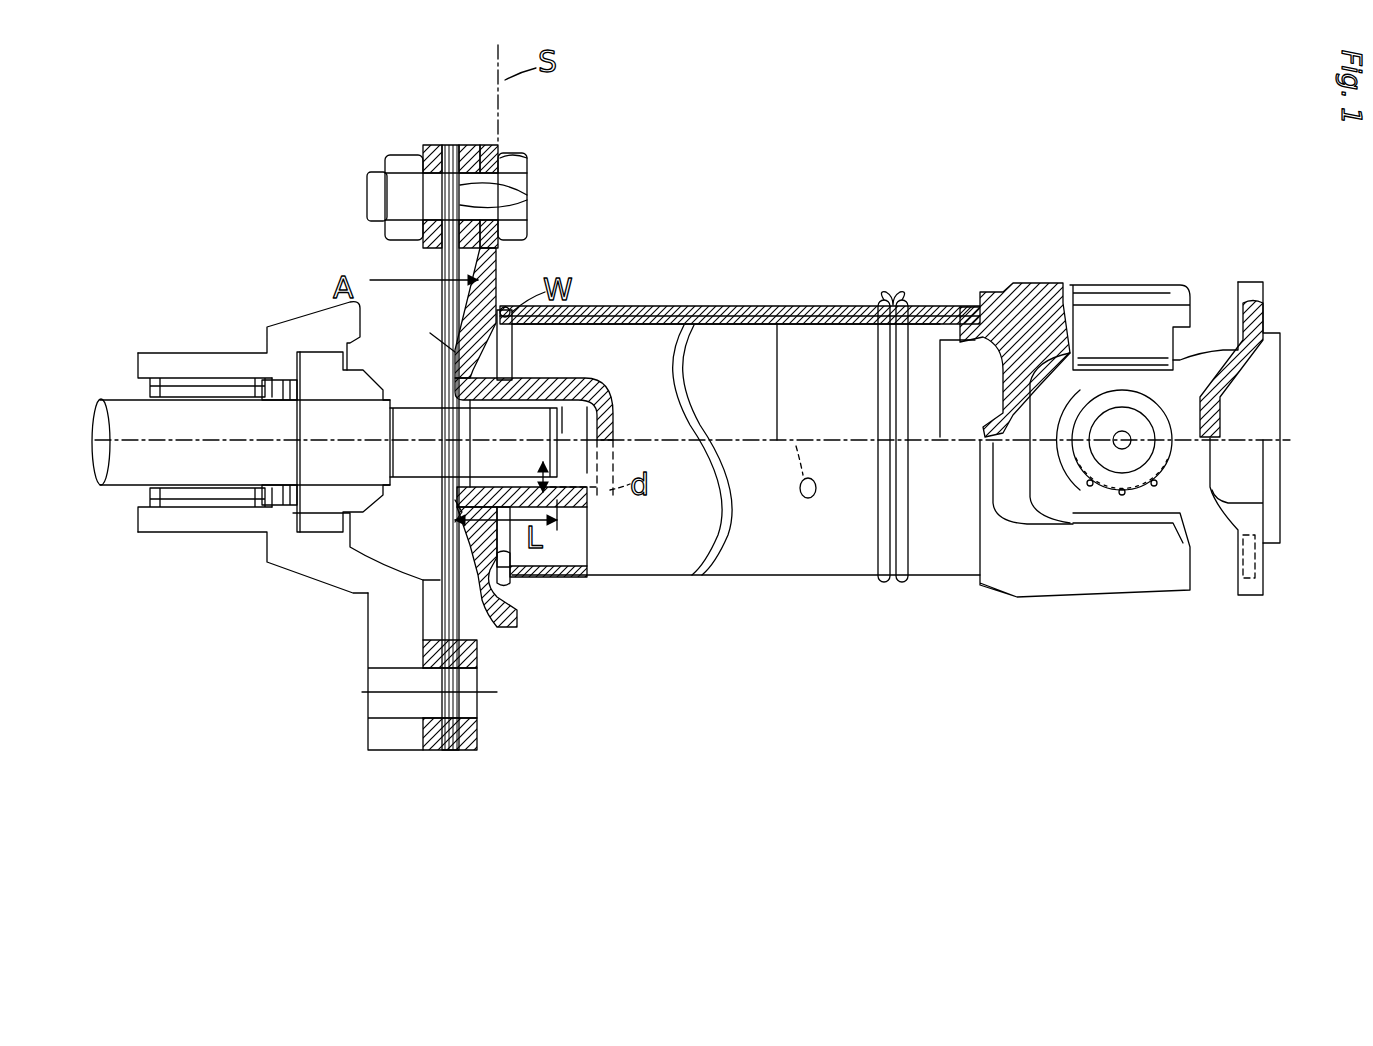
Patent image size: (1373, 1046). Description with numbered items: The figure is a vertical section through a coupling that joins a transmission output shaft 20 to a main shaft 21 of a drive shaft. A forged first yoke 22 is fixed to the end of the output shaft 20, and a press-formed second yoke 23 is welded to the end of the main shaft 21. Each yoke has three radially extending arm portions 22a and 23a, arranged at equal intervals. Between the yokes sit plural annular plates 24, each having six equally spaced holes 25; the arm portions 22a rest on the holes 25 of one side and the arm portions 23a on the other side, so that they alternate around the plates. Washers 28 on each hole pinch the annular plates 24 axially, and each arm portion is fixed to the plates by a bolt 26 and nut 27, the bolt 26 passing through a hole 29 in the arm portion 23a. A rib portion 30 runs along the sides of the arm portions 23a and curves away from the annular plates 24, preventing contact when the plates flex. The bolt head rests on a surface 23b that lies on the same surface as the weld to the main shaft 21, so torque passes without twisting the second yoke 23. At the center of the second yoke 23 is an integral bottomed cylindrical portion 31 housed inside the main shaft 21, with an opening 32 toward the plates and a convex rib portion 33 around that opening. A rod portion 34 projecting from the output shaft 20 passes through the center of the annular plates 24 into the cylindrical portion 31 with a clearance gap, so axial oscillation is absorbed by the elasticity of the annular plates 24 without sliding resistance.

The output shaft 20 is at (130, 483).
The main shaft 21 is at (670, 318).
The first yoke 22 is at (200, 355).
The arm portions 22a is at (375, 622).
The second yoke 23 is at (547, 360).
The arm portions 23a is at (498, 258).
The surface 23b is at (495, 148).
The annular plates 24 is at (452, 145).
The holes 25 is at (470, 192).
The bolt 26 is at (490, 692).
The nut 27 is at (390, 232).
The washers 28 is at (470, 145).
The hole 29 is at (528, 163).
The rib portion 30 is at (512, 585).
The cylindrical portion 31 is at (583, 378).
The opening 32 is at (455, 530).
The rib portion 33 is at (458, 502).
The rod portion 34 is at (530, 422).